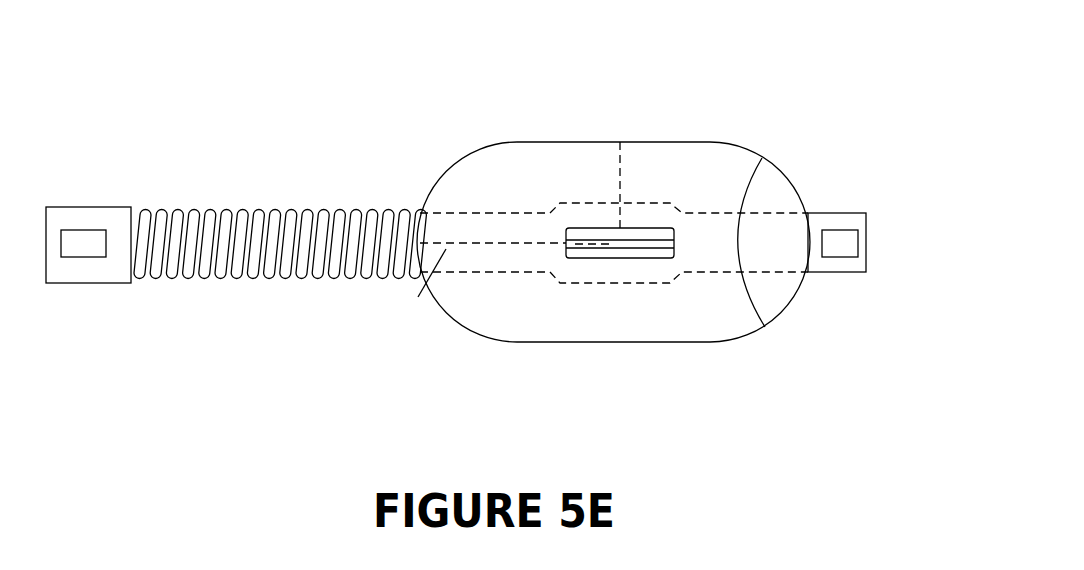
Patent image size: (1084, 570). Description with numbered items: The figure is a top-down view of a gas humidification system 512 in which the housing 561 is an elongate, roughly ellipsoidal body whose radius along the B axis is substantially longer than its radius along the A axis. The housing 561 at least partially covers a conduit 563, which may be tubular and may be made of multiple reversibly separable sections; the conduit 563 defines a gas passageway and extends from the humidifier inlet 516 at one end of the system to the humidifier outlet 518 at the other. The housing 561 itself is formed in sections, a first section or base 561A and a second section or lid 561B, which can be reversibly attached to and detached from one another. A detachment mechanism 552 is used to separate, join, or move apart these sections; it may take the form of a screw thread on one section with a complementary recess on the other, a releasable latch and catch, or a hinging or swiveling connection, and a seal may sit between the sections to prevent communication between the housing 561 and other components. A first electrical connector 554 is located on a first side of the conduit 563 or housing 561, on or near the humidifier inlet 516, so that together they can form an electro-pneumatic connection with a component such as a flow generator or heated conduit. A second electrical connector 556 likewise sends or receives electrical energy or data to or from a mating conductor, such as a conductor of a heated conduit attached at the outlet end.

The gas humidification system 512 is at (416, 355).
The humidifier inlet 516 is at (106, 283).
The humidifier outlet 518 is at (849, 273).
The detachment mechanism 552 is at (750, 198).
The first electrical connector 554 is at (80, 237).
The second electrical connector 556 is at (840, 248).
The housing 561 is at (800, 182).
The base 561A is at (762, 160).
The lid 561B is at (777, 167).
The conduit 563 is at (428, 276).